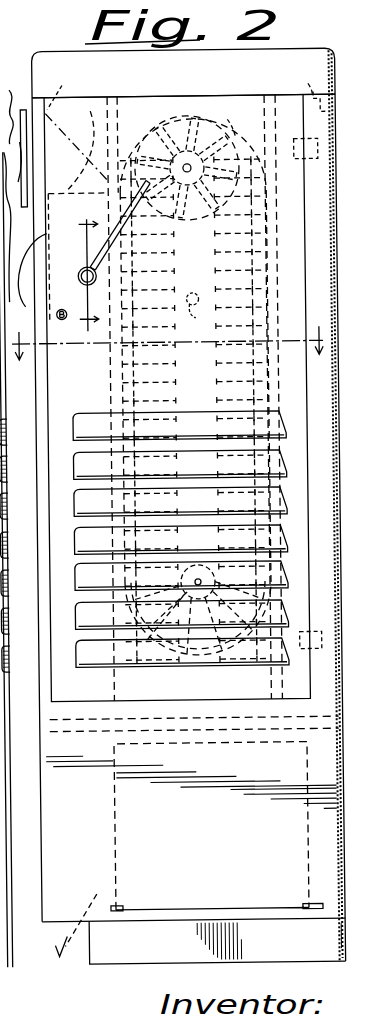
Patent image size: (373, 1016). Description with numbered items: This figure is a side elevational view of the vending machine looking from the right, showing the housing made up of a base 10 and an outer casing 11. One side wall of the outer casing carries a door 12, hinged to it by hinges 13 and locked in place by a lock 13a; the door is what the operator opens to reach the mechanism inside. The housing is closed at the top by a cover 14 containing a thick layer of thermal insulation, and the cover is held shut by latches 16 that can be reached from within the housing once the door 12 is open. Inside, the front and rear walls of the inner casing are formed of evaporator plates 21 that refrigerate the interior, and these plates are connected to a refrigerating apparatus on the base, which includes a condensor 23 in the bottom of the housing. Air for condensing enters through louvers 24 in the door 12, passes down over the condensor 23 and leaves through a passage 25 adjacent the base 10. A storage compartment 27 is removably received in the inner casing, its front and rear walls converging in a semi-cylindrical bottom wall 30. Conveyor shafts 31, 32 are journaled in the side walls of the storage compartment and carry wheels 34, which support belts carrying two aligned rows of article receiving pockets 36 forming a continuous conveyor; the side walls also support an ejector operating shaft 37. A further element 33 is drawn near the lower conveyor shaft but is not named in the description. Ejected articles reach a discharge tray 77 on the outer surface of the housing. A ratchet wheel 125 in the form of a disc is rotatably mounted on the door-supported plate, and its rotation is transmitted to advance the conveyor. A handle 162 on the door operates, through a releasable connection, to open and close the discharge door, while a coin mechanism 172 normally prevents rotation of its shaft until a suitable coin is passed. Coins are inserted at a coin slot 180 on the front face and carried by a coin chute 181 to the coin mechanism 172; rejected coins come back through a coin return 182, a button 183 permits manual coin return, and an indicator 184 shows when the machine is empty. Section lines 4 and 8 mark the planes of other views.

The section line 4- 4 is at (168, 333).
The section line 8- 8 is at (88, 271).
The base 10 is at (204, 964).
The outer casing 11 is at (20, 381).
The door 12 is at (58, 423).
The hinges 13 is at (312, 163).
The lock 13a is at (65, 308).
The cover 14 is at (272, 52).
The latches 16 is at (188, 89).
The evaporator plates 21 is at (112, 376).
The condensor 23 is at (111, 836).
The louvers 24 is at (282, 462).
The passage 25 is at (50, 930).
The storage compartment 27 is at (112, 390).
The semi-cylindrical bottom wall 30 is at (150, 645).
The conveyor shaft 31 is at (197, 594).
The conveyor shaft 32 is at (196, 116).
The lower fan hub 33 is at (172, 573).
The wheels 34 is at (187, 188).
The article receiving pockets 36 is at (220, 382).
The ejector operating shaft 37 is at (197, 314).
The discharge tray 77 is at (81, 276).
The ratchet wheel 125 is at (232, 119).
The handle 162 is at (115, 240).
The coin mechanism 172 is at (78, 166).
The coin slot 180 is at (13, 143).
The coin chute 181 is at (100, 130).
The coin return 182 is at (61, 257).
The button 183 is at (14, 559).
The indicator 184 is at (24, 140).